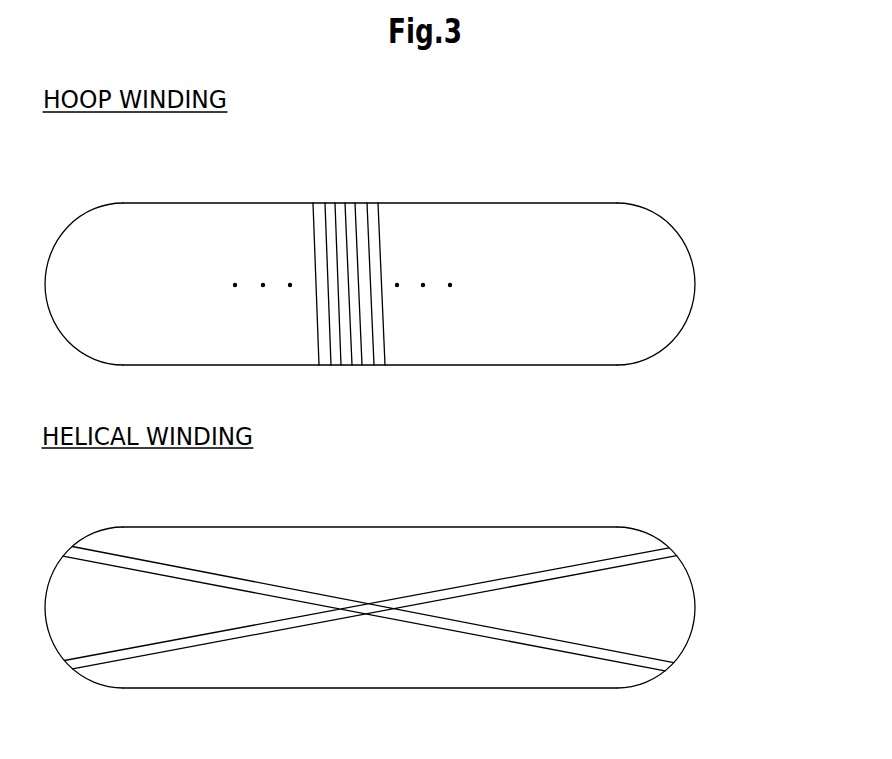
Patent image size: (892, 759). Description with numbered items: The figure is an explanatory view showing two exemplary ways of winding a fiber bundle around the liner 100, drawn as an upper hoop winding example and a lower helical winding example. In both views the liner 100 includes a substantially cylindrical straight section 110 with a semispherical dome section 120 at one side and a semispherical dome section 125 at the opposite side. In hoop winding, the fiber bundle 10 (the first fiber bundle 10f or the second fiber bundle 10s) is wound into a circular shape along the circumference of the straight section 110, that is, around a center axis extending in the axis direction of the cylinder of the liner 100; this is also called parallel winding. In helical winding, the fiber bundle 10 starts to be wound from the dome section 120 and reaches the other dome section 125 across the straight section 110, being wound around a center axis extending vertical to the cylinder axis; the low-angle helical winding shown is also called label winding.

The liner 100 is at (423, 253).
The straight section 110 is at (613, 190).
The dome section 120 is at (128, 184).
The dome section 125 is at (695, 184).
The fiber bundle 10 is at (341, 307).
The first fiber bundle 10f is at (341, 307).
The second fiber bundle 10s is at (323, 352).